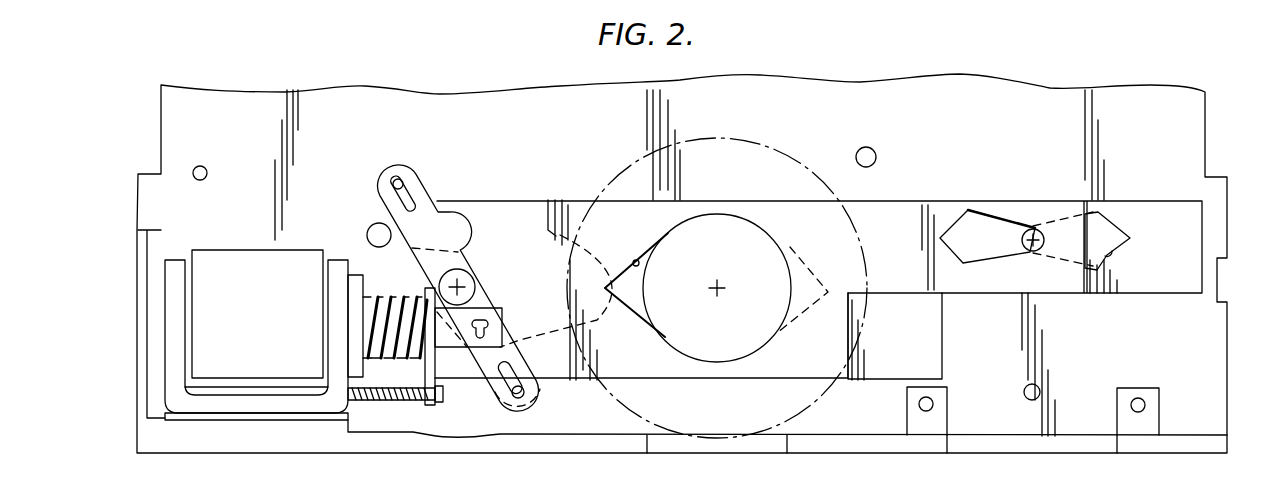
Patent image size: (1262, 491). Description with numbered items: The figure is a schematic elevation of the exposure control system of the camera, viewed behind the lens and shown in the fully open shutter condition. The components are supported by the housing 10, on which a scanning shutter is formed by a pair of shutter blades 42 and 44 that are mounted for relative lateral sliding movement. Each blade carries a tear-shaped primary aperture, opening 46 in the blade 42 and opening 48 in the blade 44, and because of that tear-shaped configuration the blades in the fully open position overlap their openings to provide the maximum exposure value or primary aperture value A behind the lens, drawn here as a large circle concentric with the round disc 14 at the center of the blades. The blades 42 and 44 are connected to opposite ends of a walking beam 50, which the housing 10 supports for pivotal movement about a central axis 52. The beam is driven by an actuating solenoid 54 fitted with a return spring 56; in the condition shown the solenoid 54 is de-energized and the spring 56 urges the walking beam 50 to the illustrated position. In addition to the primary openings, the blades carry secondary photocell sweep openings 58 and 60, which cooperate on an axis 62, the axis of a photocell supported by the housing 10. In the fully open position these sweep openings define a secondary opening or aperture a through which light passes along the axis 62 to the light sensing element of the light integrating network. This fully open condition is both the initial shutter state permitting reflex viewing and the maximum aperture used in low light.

The housing 10 is at (1190, 142).
The disc 14 is at (722, 285).
The shutter blade 42 is at (890, 216).
The shutter blade 44 is at (925, 346).
The primary shaped aperture 46 is at (637, 261).
The primary shaped aperture 48 is at (796, 273).
The walking beam 50 is at (437, 227).
The central axis 52 is at (468, 283).
The actuating solenoid 54 is at (265, 268).
The return spring 56 is at (379, 300).
The photocell sweep opening 58 is at (1003, 210).
The photocell sweep opening 60 is at (1113, 251).
The axis 62 is at (1033, 228).
The primary aperture value A is at (726, 225).
The secondary opening or aperture a is at (1044, 242).